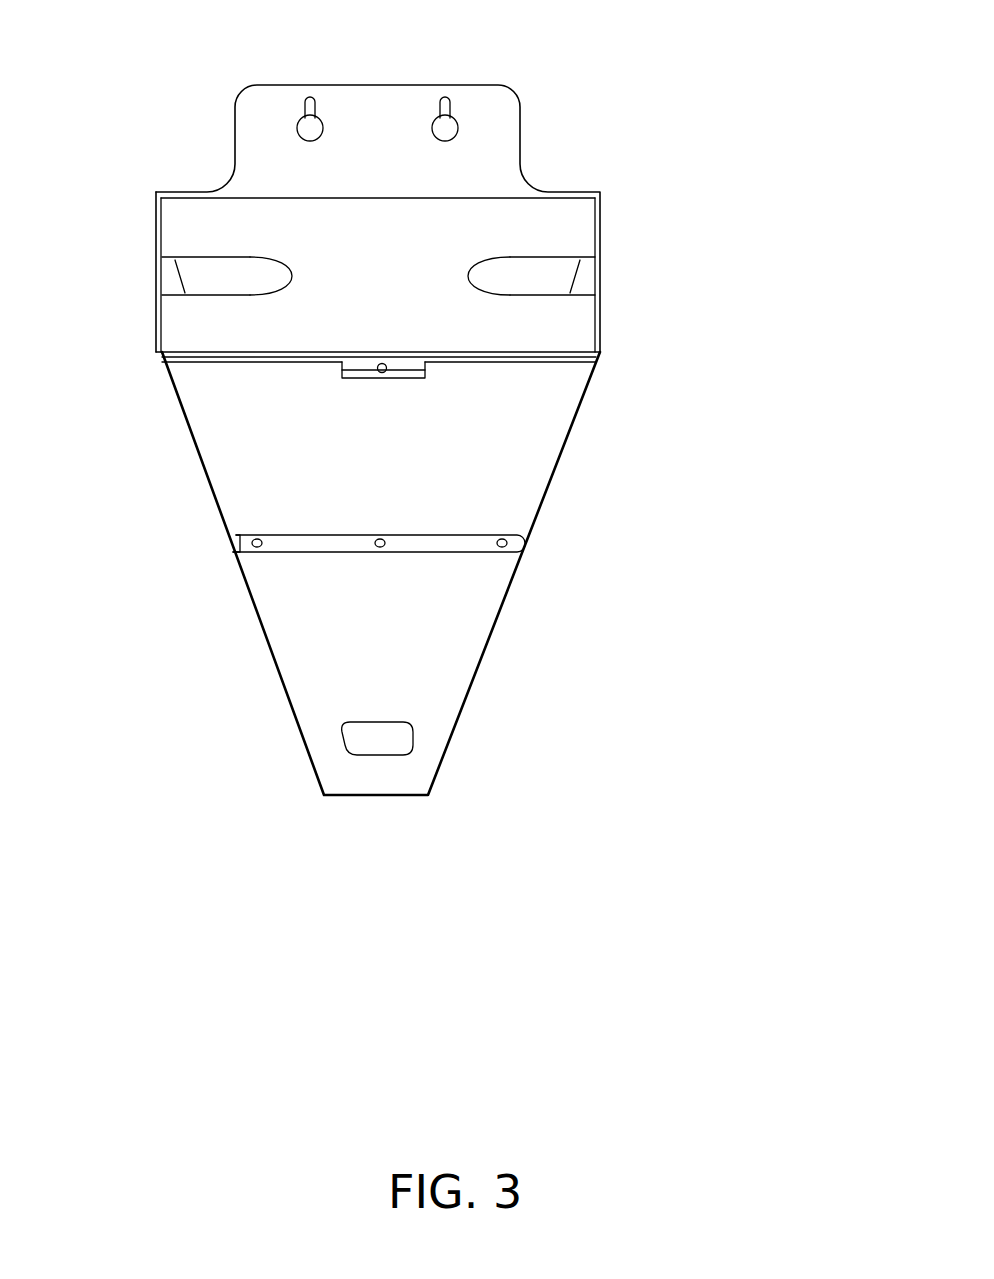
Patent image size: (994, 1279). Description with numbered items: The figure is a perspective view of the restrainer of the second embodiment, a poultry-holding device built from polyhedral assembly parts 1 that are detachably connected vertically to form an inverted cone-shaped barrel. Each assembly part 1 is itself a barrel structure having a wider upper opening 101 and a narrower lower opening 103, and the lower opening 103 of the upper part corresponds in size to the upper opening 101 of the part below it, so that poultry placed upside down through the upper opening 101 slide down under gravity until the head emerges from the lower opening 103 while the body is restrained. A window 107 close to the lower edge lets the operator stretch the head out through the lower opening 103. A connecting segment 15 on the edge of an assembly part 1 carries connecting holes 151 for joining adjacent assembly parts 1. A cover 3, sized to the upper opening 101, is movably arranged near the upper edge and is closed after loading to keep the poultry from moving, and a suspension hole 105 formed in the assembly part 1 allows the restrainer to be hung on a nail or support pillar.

The assembly part 1 is at (495, 447).
The cover 3 is at (330, 305).
The connecting segment 15 is at (453, 550).
The upper opening 101 is at (520, 276).
The lower opening 103 is at (420, 820).
The suspension hole 105 is at (465, 123).
The window 107 is at (352, 728).
The connecting hole 151 is at (210, 544).